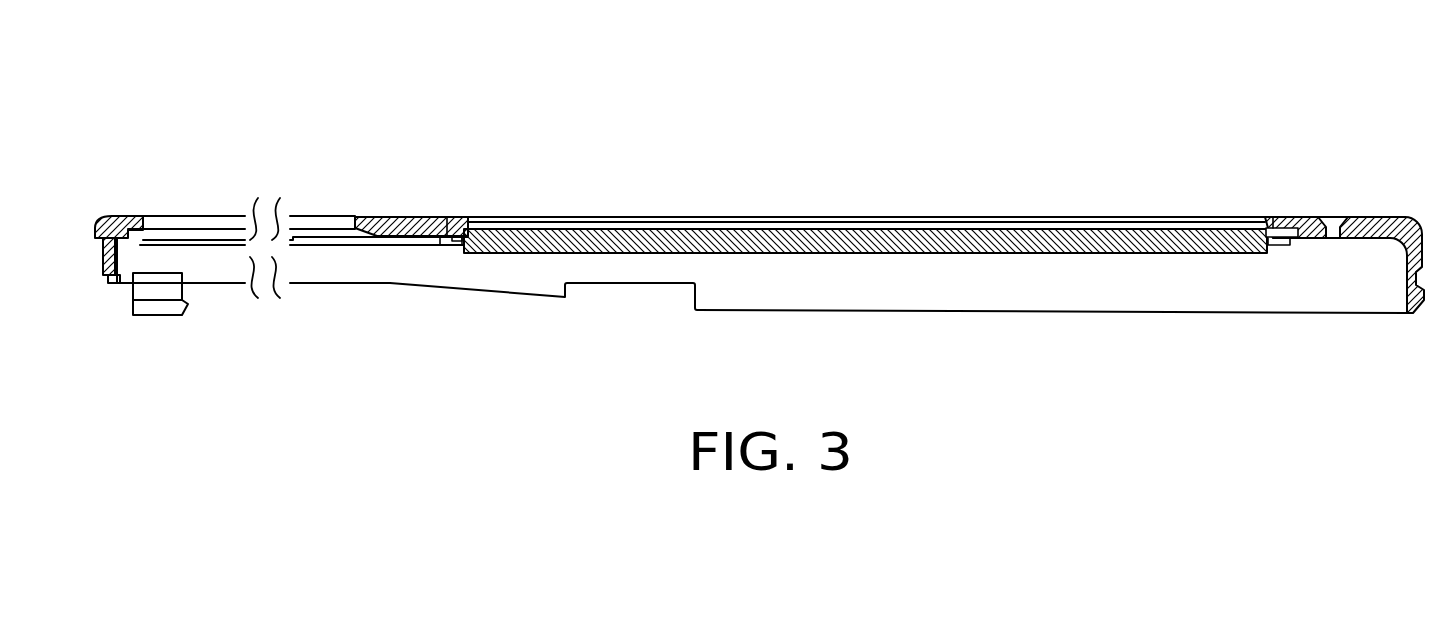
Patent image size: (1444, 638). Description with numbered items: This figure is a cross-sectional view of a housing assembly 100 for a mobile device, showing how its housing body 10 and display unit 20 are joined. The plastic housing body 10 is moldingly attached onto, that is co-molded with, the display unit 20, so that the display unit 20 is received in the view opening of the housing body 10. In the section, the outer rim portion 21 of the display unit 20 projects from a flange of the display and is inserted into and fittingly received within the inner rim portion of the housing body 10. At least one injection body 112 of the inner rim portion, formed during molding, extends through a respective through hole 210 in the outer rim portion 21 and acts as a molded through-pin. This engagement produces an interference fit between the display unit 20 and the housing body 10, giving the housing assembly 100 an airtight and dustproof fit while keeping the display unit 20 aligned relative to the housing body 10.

The housing assembly 100 is at (797, 46).
The housing body 10 is at (1371, 217).
The display unit 20 is at (542, 237).
The outer rim portion 21 is at (440, 227).
The through hole 210 is at (453, 223).
The injection body 112 is at (450, 237).